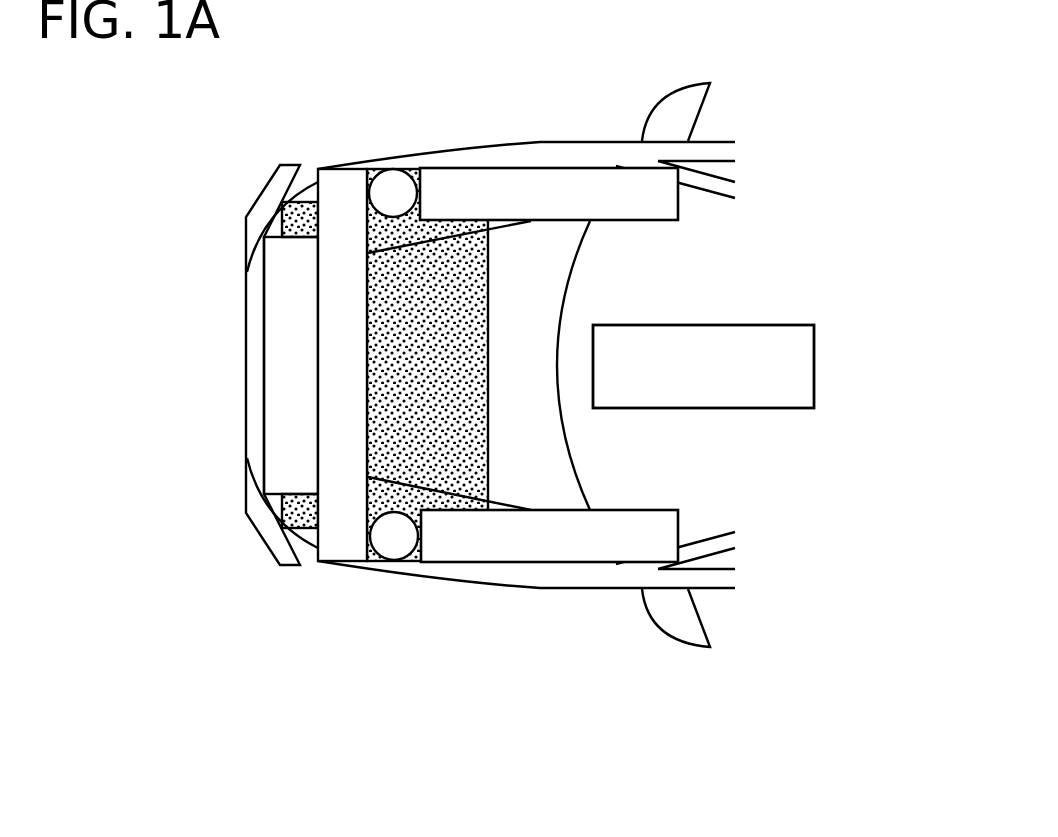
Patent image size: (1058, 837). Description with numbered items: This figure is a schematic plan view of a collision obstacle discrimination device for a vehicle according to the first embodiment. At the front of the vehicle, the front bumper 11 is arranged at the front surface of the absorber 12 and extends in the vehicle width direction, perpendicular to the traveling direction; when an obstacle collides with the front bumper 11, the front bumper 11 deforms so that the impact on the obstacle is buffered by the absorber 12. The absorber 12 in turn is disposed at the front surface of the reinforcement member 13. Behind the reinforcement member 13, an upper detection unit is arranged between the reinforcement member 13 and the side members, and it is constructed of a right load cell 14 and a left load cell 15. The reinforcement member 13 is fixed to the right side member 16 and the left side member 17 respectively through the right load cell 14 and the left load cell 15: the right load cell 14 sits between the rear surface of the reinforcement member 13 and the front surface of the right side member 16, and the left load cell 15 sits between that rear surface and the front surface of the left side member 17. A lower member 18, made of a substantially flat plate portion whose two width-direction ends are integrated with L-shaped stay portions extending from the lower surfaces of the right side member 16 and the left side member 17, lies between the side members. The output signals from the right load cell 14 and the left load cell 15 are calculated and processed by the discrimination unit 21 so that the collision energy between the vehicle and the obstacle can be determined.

The front bumper 11 is at (252, 340).
The absorber 12 is at (247, 493).
The reinforcement member 13 is at (337, 560).
The right load cell 14 is at (393, 177).
The left load cell 15 is at (393, 560).
The right side member 16 is at (493, 170).
The left side member 17 is at (488, 562).
The lower member 18 is at (483, 413).
The discrimination unit 21 is at (815, 343).